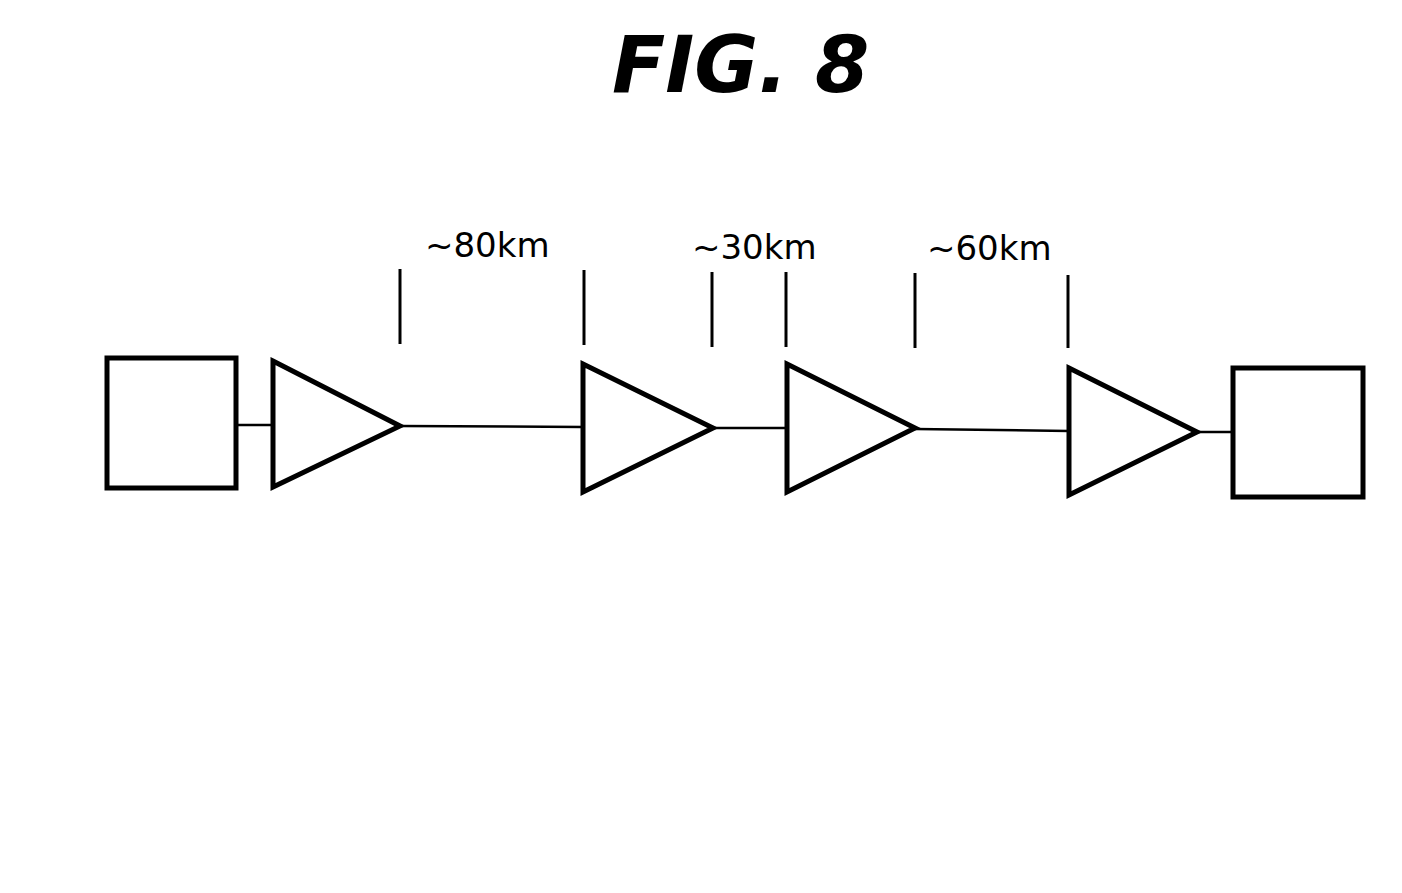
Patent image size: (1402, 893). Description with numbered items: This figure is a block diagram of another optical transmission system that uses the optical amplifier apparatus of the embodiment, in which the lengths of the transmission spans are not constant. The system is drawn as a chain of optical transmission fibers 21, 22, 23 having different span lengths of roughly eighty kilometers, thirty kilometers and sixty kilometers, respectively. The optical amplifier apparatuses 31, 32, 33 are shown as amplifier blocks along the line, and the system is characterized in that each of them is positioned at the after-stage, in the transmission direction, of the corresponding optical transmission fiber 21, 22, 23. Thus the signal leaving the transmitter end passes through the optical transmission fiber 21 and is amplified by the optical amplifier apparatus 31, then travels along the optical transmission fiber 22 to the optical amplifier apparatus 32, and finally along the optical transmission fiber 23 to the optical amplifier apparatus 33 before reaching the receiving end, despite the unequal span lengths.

The optical transmission fiber 21 is at (475, 430).
The optical transmission fiber 22 is at (740, 430).
The optical transmission fiber 23 is at (990, 432).
The optical amplifier apparatus 31 is at (613, 480).
The optical amplifier apparatus 32 is at (830, 473).
The optical amplifier apparatus 33 is at (1113, 477).